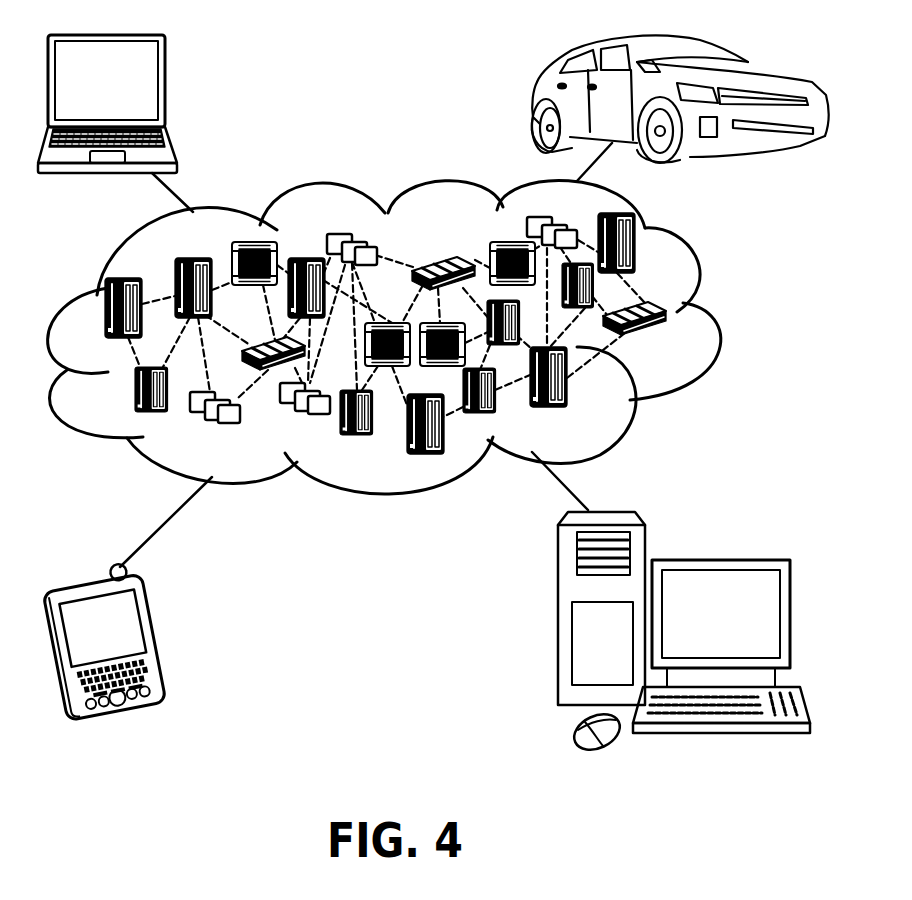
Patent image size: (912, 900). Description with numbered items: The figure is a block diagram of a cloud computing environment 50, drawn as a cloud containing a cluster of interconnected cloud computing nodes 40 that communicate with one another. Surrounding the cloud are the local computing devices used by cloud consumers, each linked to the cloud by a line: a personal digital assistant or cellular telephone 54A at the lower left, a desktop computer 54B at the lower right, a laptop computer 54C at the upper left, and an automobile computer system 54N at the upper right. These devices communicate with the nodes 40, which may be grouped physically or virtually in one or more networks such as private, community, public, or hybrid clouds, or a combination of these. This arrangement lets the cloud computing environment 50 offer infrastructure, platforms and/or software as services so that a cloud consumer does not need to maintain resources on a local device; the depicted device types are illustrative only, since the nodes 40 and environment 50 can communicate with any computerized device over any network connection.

The cloud computing nodes 40 is at (670, 342).
The cloud computing environment 50 is at (718, 319).
The personal digital assistant (PDA) or cellular telephone 54A is at (157, 637).
The desktop computer 54B is at (720, 560).
The laptop computer 54C is at (165, 86).
The automobile computer system 54N is at (532, 98).